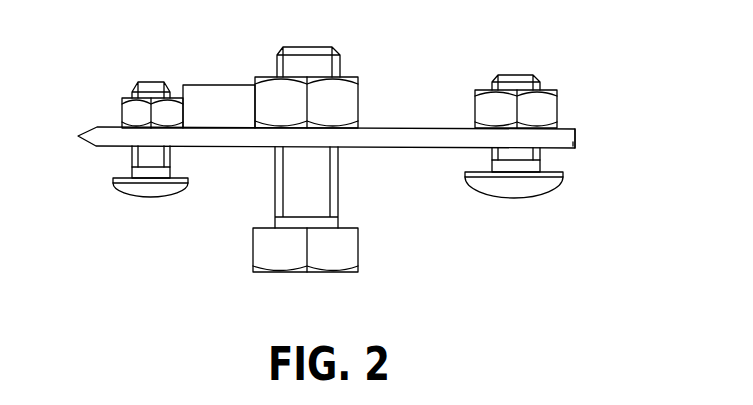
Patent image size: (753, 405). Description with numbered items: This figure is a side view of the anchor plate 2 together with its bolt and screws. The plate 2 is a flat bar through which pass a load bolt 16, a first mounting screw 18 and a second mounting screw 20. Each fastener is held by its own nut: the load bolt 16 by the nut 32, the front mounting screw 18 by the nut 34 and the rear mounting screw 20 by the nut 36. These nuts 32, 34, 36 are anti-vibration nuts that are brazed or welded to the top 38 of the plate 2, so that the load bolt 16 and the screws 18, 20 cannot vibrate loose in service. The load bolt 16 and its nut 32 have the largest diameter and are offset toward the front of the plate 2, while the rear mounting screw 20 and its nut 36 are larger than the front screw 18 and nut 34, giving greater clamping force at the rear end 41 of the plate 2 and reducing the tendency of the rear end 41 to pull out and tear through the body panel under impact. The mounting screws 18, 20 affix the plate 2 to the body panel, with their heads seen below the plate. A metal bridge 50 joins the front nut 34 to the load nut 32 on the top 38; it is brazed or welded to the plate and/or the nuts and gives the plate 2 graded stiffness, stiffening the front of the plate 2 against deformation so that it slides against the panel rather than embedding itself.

The anchor plate 2 is at (577, 142).
The load bolt 16 is at (328, 272).
The first mounting screw 18 is at (128, 197).
The second mounting screw 20 is at (538, 195).
The nut 32 is at (343, 100).
The nut 34 is at (127, 110).
The nut 36 is at (548, 102).
The top of the plate 38 is at (423, 129).
The rear end 41 is at (576, 130).
The metal bridge 50 is at (208, 97).